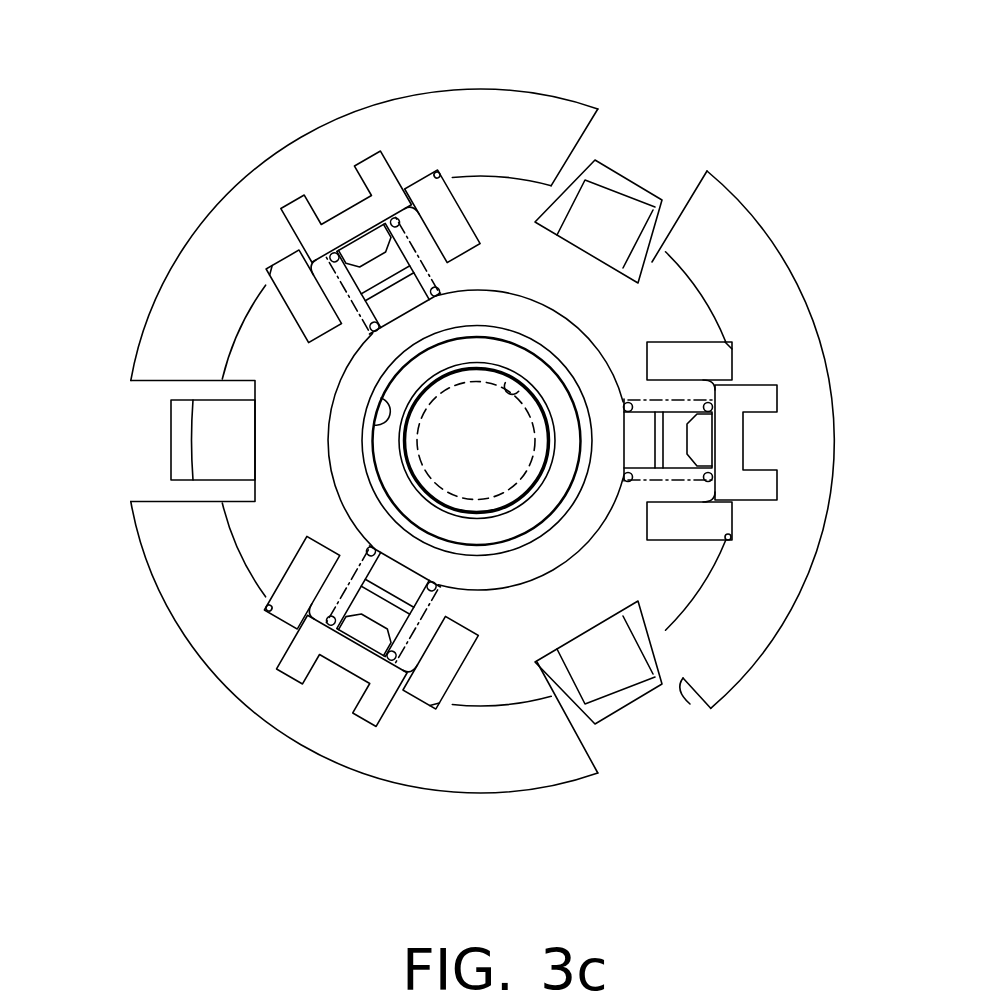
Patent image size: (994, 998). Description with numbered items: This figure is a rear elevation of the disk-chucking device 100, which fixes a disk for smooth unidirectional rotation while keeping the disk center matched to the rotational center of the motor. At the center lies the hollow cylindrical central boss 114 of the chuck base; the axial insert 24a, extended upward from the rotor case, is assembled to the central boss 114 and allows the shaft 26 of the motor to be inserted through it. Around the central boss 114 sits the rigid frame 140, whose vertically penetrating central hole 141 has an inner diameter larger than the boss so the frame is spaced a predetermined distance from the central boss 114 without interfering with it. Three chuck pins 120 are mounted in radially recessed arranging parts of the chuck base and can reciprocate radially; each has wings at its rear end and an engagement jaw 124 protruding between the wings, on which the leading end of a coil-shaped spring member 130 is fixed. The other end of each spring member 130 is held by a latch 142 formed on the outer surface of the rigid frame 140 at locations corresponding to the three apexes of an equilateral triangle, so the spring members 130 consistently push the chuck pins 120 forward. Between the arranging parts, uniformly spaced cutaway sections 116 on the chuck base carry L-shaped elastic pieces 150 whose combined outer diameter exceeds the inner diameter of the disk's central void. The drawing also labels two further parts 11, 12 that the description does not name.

The disk-chucking device 100 is at (777, 97).
The protrusion 11 is at (533, 393).
The base ring 12 is at (660, 287).
The axial insert 24a is at (413, 447).
The shaft 26 is at (493, 470).
The central boss 114 is at (547, 507).
The cutaway sections 116 is at (683, 690).
The chuck pins 120 is at (355, 218).
The engagement jaw 124 is at (357, 245).
The spring members 130 is at (340, 292).
The rigid frame 140 is at (538, 313).
The central hole 141 is at (378, 426).
The latches 142 is at (387, 293).
The elastic pieces 150 is at (630, 697).